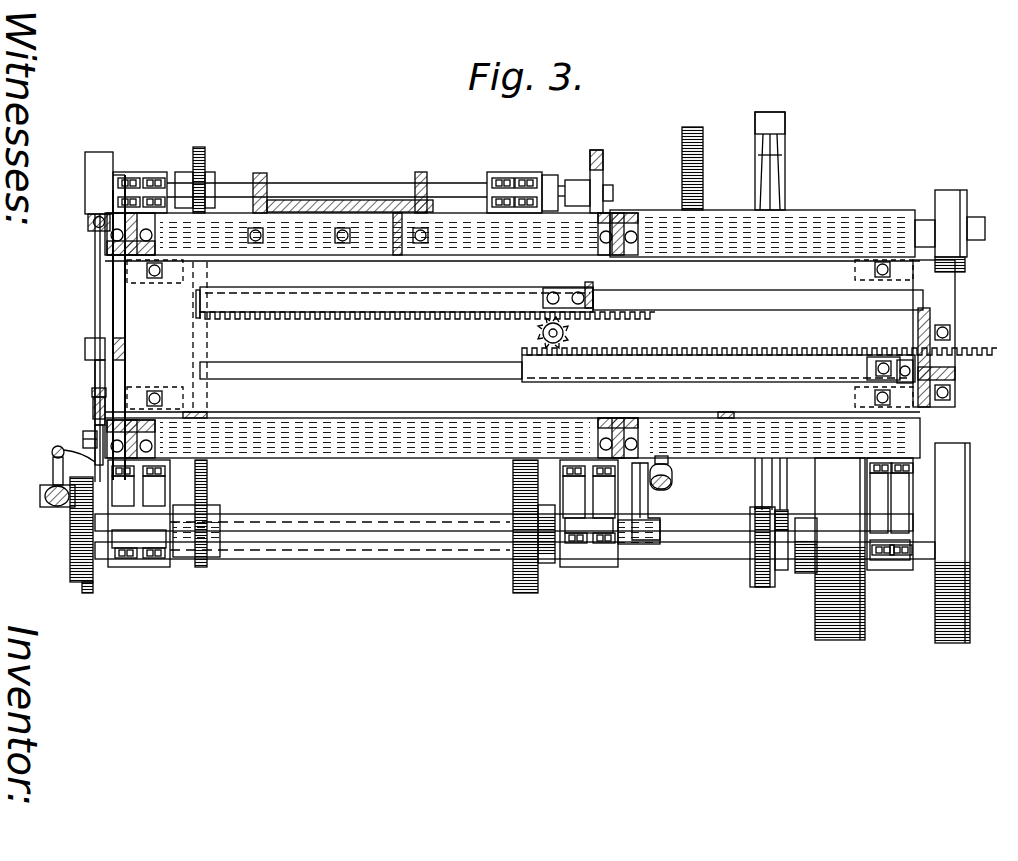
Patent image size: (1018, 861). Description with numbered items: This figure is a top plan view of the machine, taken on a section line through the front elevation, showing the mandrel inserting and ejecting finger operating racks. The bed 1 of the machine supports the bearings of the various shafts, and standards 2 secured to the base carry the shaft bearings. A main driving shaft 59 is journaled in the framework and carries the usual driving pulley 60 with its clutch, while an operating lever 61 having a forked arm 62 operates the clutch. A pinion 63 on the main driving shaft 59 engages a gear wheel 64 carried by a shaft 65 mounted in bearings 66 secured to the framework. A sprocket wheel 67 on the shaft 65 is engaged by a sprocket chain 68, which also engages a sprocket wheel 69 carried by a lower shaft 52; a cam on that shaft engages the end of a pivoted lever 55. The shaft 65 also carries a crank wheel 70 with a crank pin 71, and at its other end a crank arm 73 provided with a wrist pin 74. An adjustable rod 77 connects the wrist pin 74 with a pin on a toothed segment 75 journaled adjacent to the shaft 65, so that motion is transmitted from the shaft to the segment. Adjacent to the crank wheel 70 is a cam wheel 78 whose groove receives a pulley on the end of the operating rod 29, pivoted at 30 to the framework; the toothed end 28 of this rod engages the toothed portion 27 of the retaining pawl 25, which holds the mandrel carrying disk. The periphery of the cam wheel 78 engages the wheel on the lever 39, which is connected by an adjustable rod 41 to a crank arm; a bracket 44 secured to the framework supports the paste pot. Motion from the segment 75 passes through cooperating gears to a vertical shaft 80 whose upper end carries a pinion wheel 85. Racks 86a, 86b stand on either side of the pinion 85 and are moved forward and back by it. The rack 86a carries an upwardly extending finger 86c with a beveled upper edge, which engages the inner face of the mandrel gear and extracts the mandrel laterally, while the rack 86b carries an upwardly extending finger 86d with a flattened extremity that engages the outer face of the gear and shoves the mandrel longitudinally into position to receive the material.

The bed of the machine 1 is at (812, 228).
The standard 2 is at (155, 242).
The retaining pawl 25 is at (95, 370).
The toothed portion 27 is at (92, 392).
The toothed end 28 is at (93, 402).
The operating rod 29 is at (53, 460).
The pivot 30 is at (83, 438).
The lever 39 is at (93, 284).
The adjustable rod 41 is at (88, 221).
The bracket 44 is at (352, 210).
The shaft 52 is at (302, 196).
The pivoted lever 55 is at (598, 150).
The main driving shaft 59 is at (428, 548).
The driving pulley 60 is at (815, 608).
The operating lever 61 is at (770, 128).
The forked arm 62 is at (752, 567).
The pinion 63 is at (548, 565).
The gear wheel 64 is at (525, 582).
The shaft 65 is at (422, 526).
The bearings 66 is at (145, 540).
The sprocket wheel 67 is at (220, 525).
The sprocket chain 68 is at (208, 472).
The sprocket wheel 69 is at (204, 152).
The crank wheel 70 is at (70, 550).
The crank pin 71 is at (40, 497).
The crank arm 73 is at (660, 507).
The wrist pin 74 is at (674, 480).
The toothed segment 75 is at (695, 140).
The adjustable rod 77 is at (752, 418).
The cam wheel 78 is at (93, 590).
The vertical shaft 80 is at (543, 334).
The pinion wheel 85 is at (566, 333).
The rack 86a is at (700, 353).
The rack 86b is at (438, 320).
The upwardly extending finger 86c is at (900, 366).
The upwardly extending finger 86d is at (594, 296).